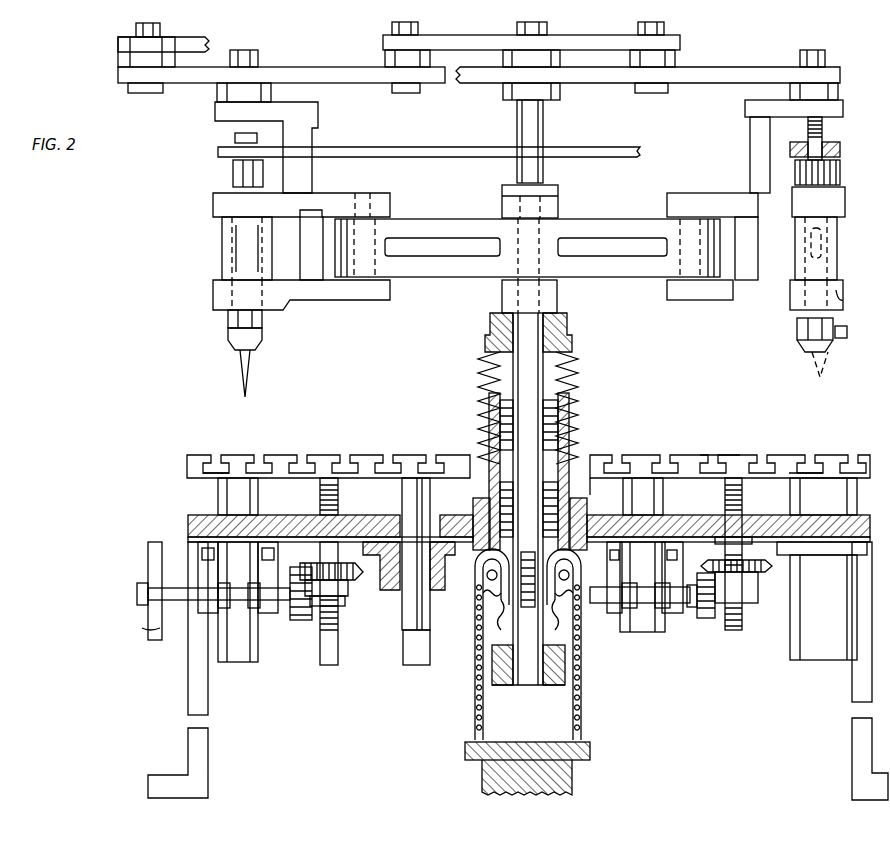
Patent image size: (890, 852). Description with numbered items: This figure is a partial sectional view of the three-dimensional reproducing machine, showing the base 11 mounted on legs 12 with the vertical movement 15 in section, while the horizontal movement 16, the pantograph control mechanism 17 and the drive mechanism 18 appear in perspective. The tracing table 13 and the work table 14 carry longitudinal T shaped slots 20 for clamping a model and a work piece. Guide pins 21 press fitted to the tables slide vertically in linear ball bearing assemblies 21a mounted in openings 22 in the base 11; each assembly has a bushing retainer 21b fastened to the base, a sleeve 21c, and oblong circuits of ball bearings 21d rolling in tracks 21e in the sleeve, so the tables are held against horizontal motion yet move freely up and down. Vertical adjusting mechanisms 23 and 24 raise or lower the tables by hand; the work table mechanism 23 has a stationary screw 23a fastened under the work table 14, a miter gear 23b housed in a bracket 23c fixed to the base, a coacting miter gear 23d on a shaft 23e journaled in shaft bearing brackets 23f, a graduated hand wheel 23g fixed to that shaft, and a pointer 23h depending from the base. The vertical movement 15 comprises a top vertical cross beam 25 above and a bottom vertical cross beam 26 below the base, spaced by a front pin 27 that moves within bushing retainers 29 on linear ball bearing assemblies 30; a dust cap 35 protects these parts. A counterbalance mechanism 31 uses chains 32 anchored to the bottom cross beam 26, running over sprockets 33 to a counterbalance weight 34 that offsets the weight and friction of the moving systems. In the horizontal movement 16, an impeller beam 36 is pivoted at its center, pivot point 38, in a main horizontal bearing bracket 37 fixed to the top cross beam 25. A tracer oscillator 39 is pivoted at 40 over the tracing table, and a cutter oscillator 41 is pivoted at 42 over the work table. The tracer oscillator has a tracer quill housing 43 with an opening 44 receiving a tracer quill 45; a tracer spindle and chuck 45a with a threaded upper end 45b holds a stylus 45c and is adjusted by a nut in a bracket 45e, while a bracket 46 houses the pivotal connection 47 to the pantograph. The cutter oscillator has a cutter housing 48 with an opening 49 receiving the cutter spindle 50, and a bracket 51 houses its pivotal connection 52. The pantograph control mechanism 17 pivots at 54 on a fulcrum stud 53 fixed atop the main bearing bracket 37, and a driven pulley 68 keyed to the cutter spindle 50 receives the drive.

The base 11 is at (780, 514).
The legs 12 is at (188, 668).
The tracing table 13 is at (720, 455).
The work table 14 is at (187, 470).
The vertical movement 15 is at (576, 420).
The horizontal movement 16 is at (437, 287).
The pantograph control mechanism 17 is at (712, 66).
The drive mechanism 18 is at (440, 147).
The T shaped slots 20 is at (220, 458).
The guide pins 21 is at (228, 672).
The linear ball bearing assemblies 21a is at (405, 618).
The bushing retainer 21b is at (382, 590).
The sleeve 21c is at (450, 590).
The oblong circuits of ball bearings 21d is at (445, 528).
The tracks 21e is at (410, 525).
The openings 22 is at (215, 513).
The vertical adjusting mechanism 23 is at (282, 650).
The stationary screw 23a is at (320, 648).
The miter gear 23b is at (292, 585).
The bracket 23c is at (345, 632).
The coacting miter gear 23d is at (318, 648).
The shaft 23e is at (172, 588).
The shaft bearing brackets 23f is at (297, 537).
The graduated hand wheel 23g is at (145, 630).
The pointer 23h is at (152, 540).
The vertical adjusting mechanism 24 is at (748, 615).
The top vertical cross beam 25 is at (568, 330).
The bottom vertical cross beam 26 is at (500, 688).
The front pin 27 is at (510, 432).
The bushing retainers 29 is at (590, 485).
The linear ball bearing assemblies 30 is at (488, 405).
The counterbalance mechanism 31 is at (470, 692).
The chains 32 is at (475, 680).
The sprockets 33 is at (492, 612).
The counterbalance weight 34 is at (482, 778).
The dust cap 35 is at (588, 372).
The impeller beam 36 is at (445, 218).
The main horizontal bearing bracket 37 is at (560, 208).
The pivot point 38 is at (518, 298).
The tracer oscillator 39 is at (720, 300).
The pivot 40 is at (695, 193).
The cutter oscillator 41 is at (333, 300).
The pivot 42 is at (372, 195).
The tracer quill housing 43 is at (791, 298).
The opening 44 is at (840, 296).
The tracer quill 45 is at (838, 255).
The tracer spindle and chuck 45a is at (841, 170).
The threaded upper end 45b is at (823, 130).
The stylus 45c is at (824, 356).
The bracket 45e is at (841, 150).
The bracket 46 is at (752, 148).
The pivotal connection 47 is at (832, 92).
The cutter housing 48 is at (222, 297).
The opening 49 is at (228, 318).
The cutter spindle 50 is at (232, 343).
The bracket 51 is at (305, 140).
The pivotal connection 52 is at (217, 95).
The fulcrum stud 53 is at (540, 135).
The pivot 54 is at (520, 68).
The driven pulley 68 is at (225, 147).